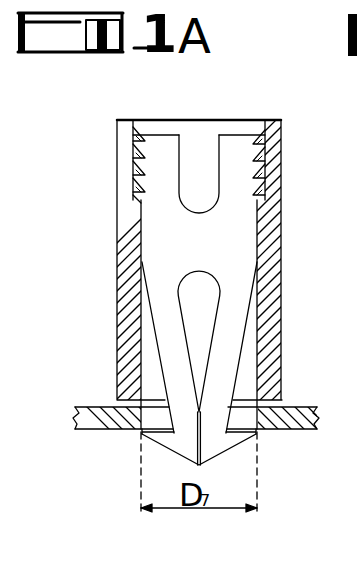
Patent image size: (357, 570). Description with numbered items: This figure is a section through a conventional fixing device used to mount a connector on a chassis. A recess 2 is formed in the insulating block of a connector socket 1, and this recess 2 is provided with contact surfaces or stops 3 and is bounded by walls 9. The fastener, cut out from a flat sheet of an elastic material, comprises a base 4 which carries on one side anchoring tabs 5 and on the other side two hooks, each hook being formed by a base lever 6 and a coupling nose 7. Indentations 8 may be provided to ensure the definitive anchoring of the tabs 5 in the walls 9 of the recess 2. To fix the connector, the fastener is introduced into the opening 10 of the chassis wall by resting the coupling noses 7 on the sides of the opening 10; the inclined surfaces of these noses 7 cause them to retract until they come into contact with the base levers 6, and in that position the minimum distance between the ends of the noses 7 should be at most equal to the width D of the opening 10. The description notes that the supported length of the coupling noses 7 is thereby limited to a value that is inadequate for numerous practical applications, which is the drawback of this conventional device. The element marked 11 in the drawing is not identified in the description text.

The connector socket 1 is at (272, 264).
The recess 2 is at (150, 353).
The contact surfaces or stops 3 is at (146, 204).
The base 4 is at (157, 236).
The anchoring tabs 5 is at (217, 98).
The base lever 6 is at (228, 352).
The coupling nose 7 is at (208, 442).
The indentations 8 is at (258, 175).
The walls of the recess 9 is at (268, 120).
The opening 10 is at (147, 428).
The plate 11 is at (90, 407).